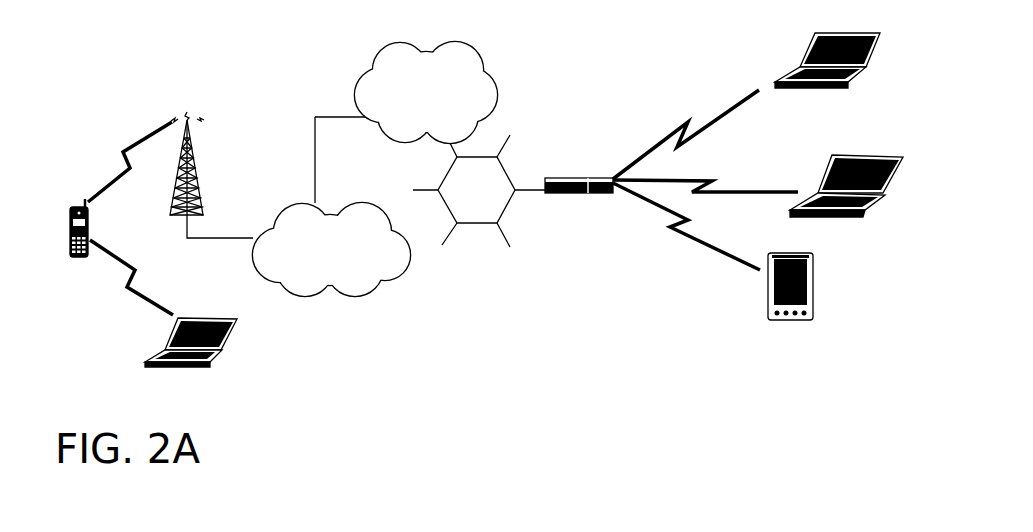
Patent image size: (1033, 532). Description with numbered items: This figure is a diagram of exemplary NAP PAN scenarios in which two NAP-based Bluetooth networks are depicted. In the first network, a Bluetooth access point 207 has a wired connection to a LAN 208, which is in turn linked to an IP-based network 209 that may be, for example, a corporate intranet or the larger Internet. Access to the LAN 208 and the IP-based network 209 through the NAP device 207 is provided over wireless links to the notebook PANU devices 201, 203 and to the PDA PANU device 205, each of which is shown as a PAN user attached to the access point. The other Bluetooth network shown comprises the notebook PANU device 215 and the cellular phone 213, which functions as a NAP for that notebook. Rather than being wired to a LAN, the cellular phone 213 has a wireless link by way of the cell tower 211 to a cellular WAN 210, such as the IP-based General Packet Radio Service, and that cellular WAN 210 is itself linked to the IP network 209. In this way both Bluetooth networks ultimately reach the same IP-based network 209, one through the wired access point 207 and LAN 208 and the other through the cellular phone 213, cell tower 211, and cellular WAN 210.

The notebook PANU device 201 is at (803, 55).
The notebook PANU device 203 is at (868, 153).
The PDA PANU device 205 is at (813, 283).
The Bluetooth access point 207 is at (582, 178).
The LAN 208 is at (507, 170).
The IP-based network 209 is at (485, 63).
The cellular WAN 210 is at (408, 260).
The cell tower 211 is at (192, 140).
The cellular phone 213 is at (88, 228).
The notebook PANU device 215 is at (237, 330).